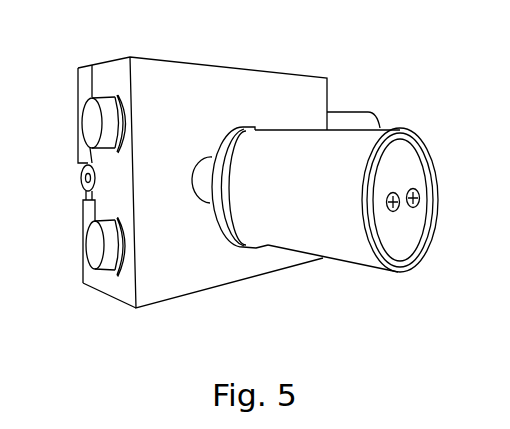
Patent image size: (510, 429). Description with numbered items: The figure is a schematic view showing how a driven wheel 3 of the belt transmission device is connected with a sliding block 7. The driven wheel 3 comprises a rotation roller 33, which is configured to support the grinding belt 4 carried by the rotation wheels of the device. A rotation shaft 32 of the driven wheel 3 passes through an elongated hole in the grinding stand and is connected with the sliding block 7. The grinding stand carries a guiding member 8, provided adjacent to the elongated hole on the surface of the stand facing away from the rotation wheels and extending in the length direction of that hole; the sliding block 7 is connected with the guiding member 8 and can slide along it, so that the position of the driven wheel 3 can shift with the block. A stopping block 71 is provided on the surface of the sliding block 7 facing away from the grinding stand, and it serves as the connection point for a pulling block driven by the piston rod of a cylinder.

The driven wheel 3 is at (323, 210).
The grinding belt 4 is at (239, 127).
The sliding block 7 is at (312, 87).
The guiding member 8 is at (93, 128).
The rotation shaft 32 is at (205, 166).
The rotation roller 33 is at (396, 272).
The stopping block 71 is at (88, 211).